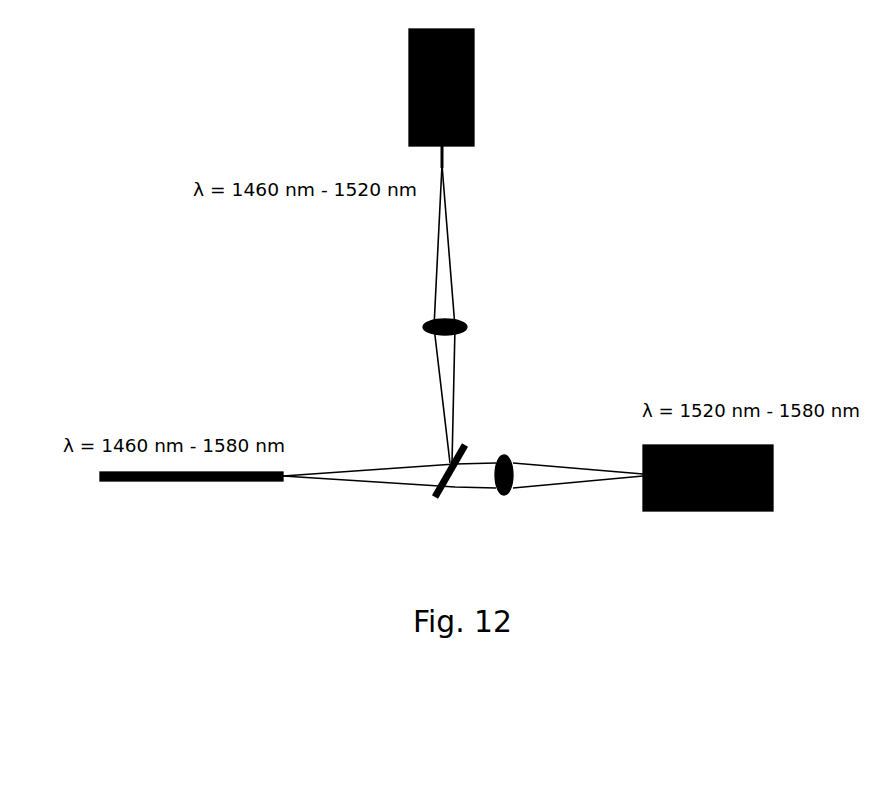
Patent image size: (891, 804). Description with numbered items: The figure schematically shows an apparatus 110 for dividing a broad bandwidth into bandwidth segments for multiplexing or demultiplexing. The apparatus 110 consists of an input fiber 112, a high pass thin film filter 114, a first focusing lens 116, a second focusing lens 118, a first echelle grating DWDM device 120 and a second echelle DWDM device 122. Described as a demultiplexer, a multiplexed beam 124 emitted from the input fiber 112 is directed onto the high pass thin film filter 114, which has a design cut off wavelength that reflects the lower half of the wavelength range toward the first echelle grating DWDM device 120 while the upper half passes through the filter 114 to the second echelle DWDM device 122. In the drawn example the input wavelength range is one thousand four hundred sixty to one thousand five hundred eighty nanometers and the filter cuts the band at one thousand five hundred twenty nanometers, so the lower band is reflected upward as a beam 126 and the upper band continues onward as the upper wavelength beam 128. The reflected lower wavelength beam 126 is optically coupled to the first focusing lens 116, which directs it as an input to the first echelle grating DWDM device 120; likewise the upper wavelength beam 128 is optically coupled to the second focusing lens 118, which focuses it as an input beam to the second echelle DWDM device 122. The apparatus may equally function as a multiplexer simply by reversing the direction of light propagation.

The apparatus for dividing a broad bandwidth 110 is at (573, 110).
The input fiber 112 is at (205, 482).
The high pass thin film filter 114 is at (444, 492).
The first focusing lens 116 is at (432, 321).
The second focusing lens 118 is at (507, 456).
The first echelle grating DWDM device 120 is at (474, 78).
The second echelle DWDM device 122 is at (773, 462).
The multiplexed beam 124 is at (416, 465).
The reflected beam 126 is at (440, 392).
The upper wavelength beam 128 is at (553, 488).